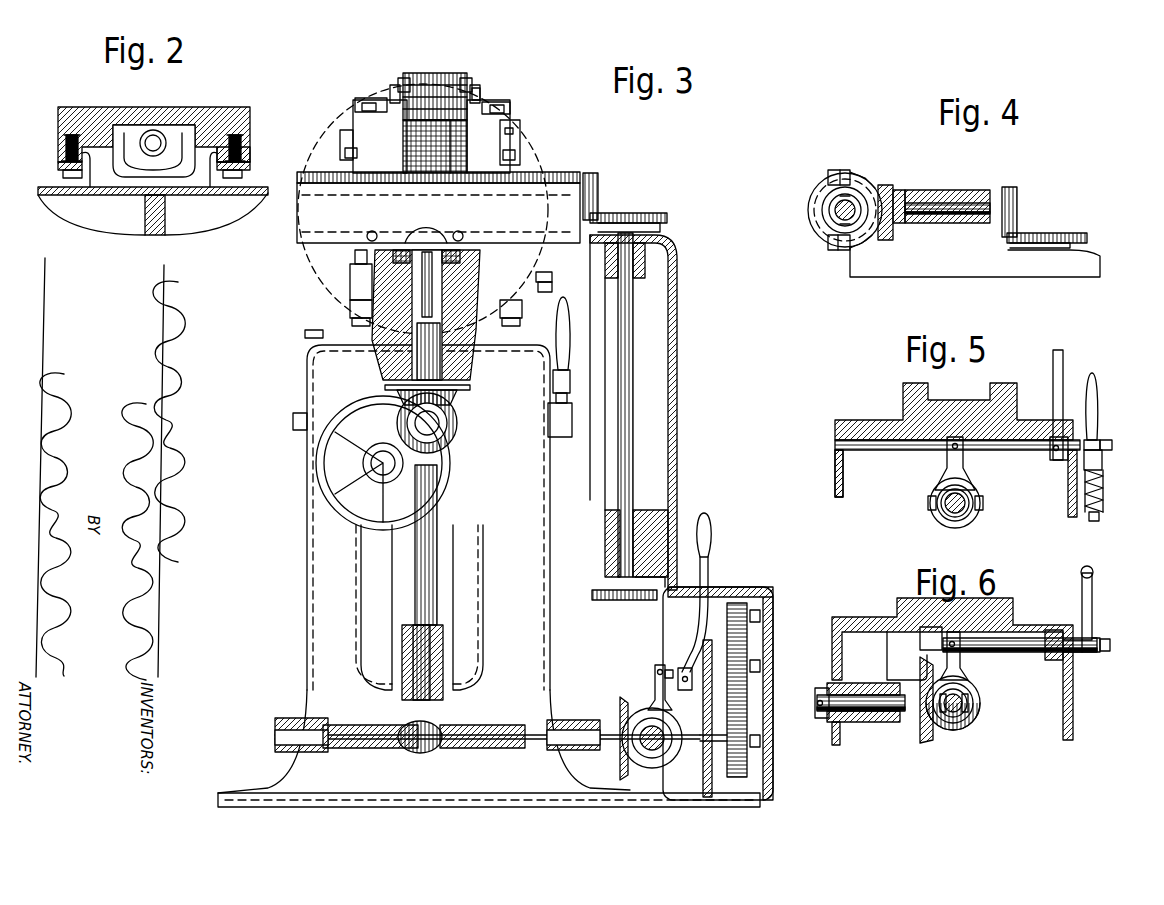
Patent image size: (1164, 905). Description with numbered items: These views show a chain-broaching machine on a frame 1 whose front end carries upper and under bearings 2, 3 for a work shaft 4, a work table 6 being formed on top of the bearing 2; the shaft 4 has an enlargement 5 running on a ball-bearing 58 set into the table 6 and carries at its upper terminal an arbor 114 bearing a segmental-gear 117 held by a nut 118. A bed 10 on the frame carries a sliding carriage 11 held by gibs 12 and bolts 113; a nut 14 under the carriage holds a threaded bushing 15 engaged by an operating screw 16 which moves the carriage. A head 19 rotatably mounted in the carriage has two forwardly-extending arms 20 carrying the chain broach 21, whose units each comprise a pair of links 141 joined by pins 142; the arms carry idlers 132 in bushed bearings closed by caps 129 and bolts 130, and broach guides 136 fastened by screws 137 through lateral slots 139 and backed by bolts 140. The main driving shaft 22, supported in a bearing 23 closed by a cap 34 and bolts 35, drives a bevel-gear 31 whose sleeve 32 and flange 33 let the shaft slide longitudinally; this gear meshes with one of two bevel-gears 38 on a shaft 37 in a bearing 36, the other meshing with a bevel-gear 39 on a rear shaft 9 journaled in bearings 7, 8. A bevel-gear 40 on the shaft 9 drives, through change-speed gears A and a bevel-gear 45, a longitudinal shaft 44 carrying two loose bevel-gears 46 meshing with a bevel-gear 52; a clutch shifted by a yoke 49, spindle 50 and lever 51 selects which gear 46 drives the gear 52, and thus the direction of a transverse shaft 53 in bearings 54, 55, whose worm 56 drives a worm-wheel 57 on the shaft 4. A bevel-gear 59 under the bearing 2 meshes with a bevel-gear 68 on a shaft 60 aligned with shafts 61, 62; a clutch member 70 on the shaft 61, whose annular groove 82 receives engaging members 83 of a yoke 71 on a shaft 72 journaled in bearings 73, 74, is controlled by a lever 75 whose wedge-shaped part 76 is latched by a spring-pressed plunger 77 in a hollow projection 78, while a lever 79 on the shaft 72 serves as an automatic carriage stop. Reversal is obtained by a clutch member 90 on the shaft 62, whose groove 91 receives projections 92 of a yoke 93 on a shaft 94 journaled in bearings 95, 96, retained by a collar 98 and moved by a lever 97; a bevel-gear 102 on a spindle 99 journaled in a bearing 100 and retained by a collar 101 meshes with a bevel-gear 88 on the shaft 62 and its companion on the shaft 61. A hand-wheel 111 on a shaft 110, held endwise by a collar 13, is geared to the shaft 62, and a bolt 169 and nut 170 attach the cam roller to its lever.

In FIG. 2, the frame 1 is at (193, 208).
In FIG. 4, the frame 1 is at (958, 262).
In FIG. 5, the frame 1 is at (834, 475).
In FIG. 6, the frame 1 is at (1074, 712).
In FIG. 3, the frame 1 is at (680, 440).
In FIG. 3, the upper bearing 2 is at (455, 385).
In FIG. 3, the under bearing 3 is at (445, 650).
In FIG. 3, the work shaft 4 is at (438, 500).
In FIG. 3, the enlargement 5 is at (372, 278).
In FIG. 3, the work table 6 is at (357, 256).
In FIG. 3, the upper bearing 7 is at (650, 262).
In FIG. 3, the under bearing 8 is at (605, 540).
In FIG. 3, the shaft 9 is at (634, 420).
In FIG. 2, the bed 10 is at (222, 127).
In FIG. 2, the carriage 11 is at (118, 113).
In FIG. 2, the gibs 12 is at (58, 165).
In FIG. 3, the gibs 12 is at (350, 312).
In FIG. 2, the collar 13 is at (66, 150).
In FIG. 2, the nut 14 is at (148, 165).
In FIG. 2, the internally screw-threaded bushing 15 is at (160, 138).
In FIG. 2, the operating screw 16 is at (154, 137).
In FIG. 3, the head 19 is at (525, 133).
In FIG. 3, the arms 20 is at (365, 127).
In FIG. 3, the chain broach 21 is at (432, 73).
In FIG. 4, the main or driving shaft 22 is at (830, 210).
In FIG. 4, the bearing 23 is at (858, 175).
In FIG. 4, the bevel-gear 31 is at (825, 235).
In FIG. 4, the sleeve 32 is at (826, 222).
In FIG. 4, the collar or flange 33 is at (875, 192).
In FIG. 4, the cap 34 is at (842, 172).
In FIG. 4, the bolts 35 is at (830, 175).
In FIG. 4, the bearing 36 is at (950, 192).
In FIG. 4, the shaft 37 is at (975, 206).
In FIG. 4, the bevel-gears 38 is at (900, 196).
In FIG. 3, the bevel-gears 38 is at (597, 175).
In FIG. 4, the bevel-gear 39 is at (1070, 234).
In FIG. 3, the bevel-gear 39 is at (655, 213).
In FIG. 3, the bevel-gear 40 is at (612, 600).
In FIG. 3, the shaft 44 is at (652, 750).
In FIG. 3, the bevel-gear 45 is at (686, 770).
In FIG. 3, the bevel-gears 46 is at (638, 760).
In FIG. 3, the yoke 49 is at (655, 690).
In FIG. 3, the spindle 50 is at (665, 672).
In FIG. 3, the operating lever 51 is at (709, 548).
In FIG. 3, the bevel-gear 52 is at (622, 700).
In FIG. 3, the transverse shaft 53 is at (530, 750).
In FIG. 3, the bearing 54 is at (318, 752).
In FIG. 3, the bearing 55 is at (595, 748).
In FIG. 3, the worm 56 is at (395, 748).
In FIG. 3, the worm-wheel 57 is at (478, 748).
In FIG. 3, the ball-bearing 58 is at (445, 320).
In FIG. 3, the bevel-gear 59 is at (455, 415).
In FIG. 3, the shaft 60 is at (420, 425).
In FIG. 5, the shaft 61 is at (955, 512).
In FIG. 6, the shaft 62 is at (970, 692).
In FIG. 3, the bevel-gear 68 is at (400, 395).
In FIG. 5, the clutch member 70 is at (965, 515).
In FIG. 5, the yoke 71 is at (965, 468).
In FIG. 5, the transverse shaft 72 is at (908, 452).
In FIG. 5, the bearing 73 is at (847, 453).
In FIG. 5, the bearing 74 is at (1056, 462).
In FIG. 5, the operating lever 75 is at (1099, 410).
In FIG. 3, the operating lever 75 is at (566, 322).
In FIG. 5, the wedge-shaped part 76 is at (1112, 467).
In FIG. 3, the wedge-shaped part 76 is at (571, 380).
In FIG. 5, the plunger 77 is at (1114, 490).
In FIG. 3, the plunger 77 is at (568, 398).
In FIG. 5, the hollow projection 78 is at (1100, 512).
In FIG. 3, the hollow projection 78 is at (573, 420).
In FIG. 5, the lever 79 is at (1062, 370).
In FIG. 5, the annular groove 82 is at (946, 511).
In FIG. 5, the engaging members 83 is at (929, 503).
In FIG. 6, the bevel-gear 88 is at (968, 707).
In FIG. 6, the clutch member 90 is at (958, 713).
In FIG. 6, the annular groove 91 is at (953, 730).
In FIG. 6, the projections 92 is at (972, 717).
In FIG. 6, the yoke 93 is at (969, 663).
In FIG. 6, the transverse shaft 94 is at (1023, 655).
In FIG. 6, the bearing 95 is at (1055, 630).
In FIG. 6, the depending bearing 96 is at (922, 645).
In FIG. 6, the operating lever 97 is at (1092, 617).
In FIG. 6, the collar 98 is at (1052, 660).
In FIG. 6, the spindle 99 is at (862, 712).
In FIG. 6, the bearing 100 is at (885, 722).
In FIG. 6, the collar 101 is at (819, 708).
In FIG. 6, the bevel-gear 102 is at (925, 745).
In FIG. 3, the shaft 110 is at (372, 465).
In FIG. 3, the hand-wheel 111 is at (345, 512).
In FIG. 2, the bolts 113 is at (243, 150).
In FIG. 3, the bolts 113 is at (355, 326).
In FIG. 3, the arbor 114 is at (422, 290).
In FIG. 3, the segmental-gear 117 is at (450, 198).
In FIG. 3, the nut 118 is at (460, 140).
In FIG. 3, the cap 129 is at (383, 99).
In FIG. 3, the bolts 130 is at (368, 104).
In FIG. 3, the idlers 132 is at (393, 87).
In FIG. 3, the chain-broach guides 136 is at (432, 146).
In FIG. 3, the screws 137 is at (515, 130).
In FIG. 3, the lateral slots 139 is at (345, 140).
In FIG. 3, the bolts 140 is at (540, 172).
In FIG. 3, the links 141 is at (403, 77).
In FIG. 3, the pin 142 is at (478, 90).
In FIG. 3, the bolt 169 is at (375, 232).
In FIG. 3, the nut 170 is at (457, 232).
In FIG. 3, the change-speed gears A is at (748, 700).